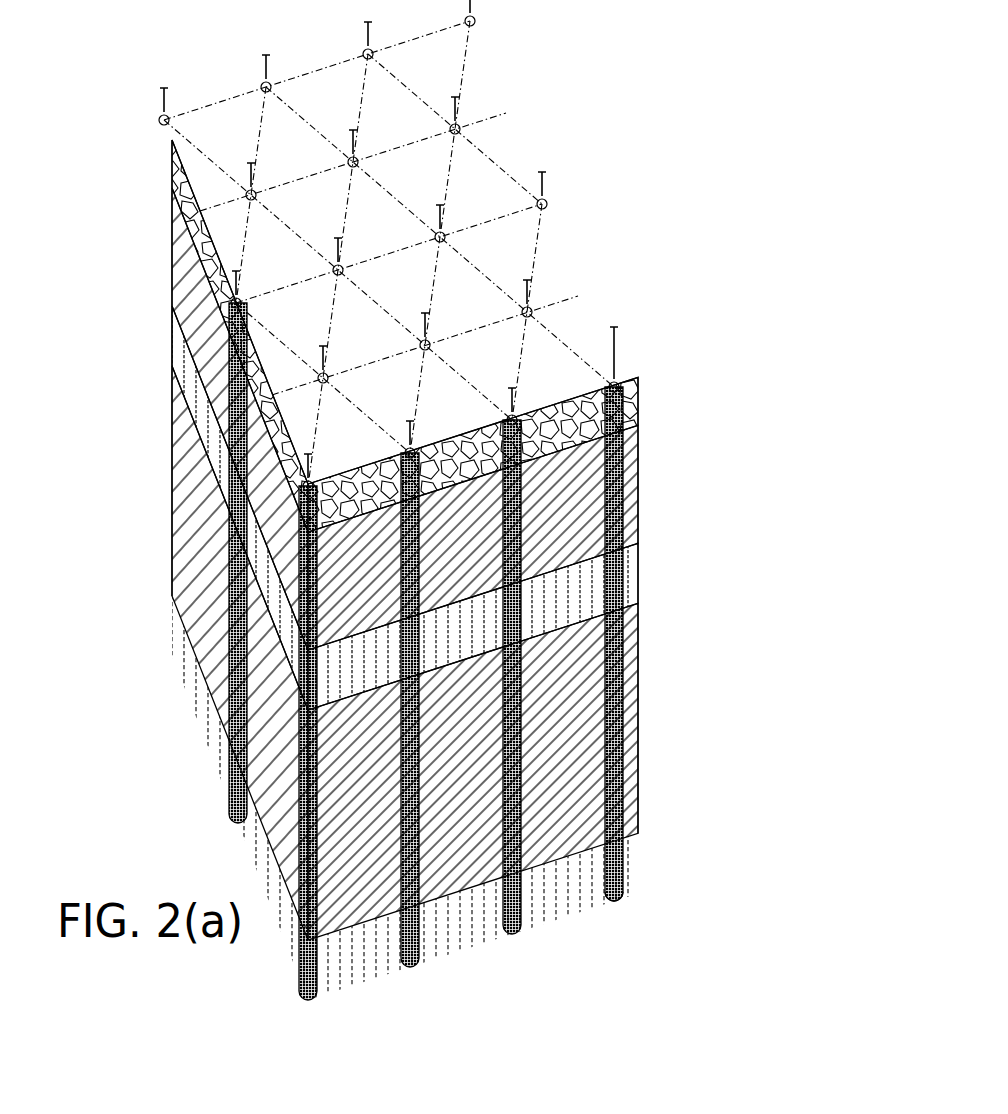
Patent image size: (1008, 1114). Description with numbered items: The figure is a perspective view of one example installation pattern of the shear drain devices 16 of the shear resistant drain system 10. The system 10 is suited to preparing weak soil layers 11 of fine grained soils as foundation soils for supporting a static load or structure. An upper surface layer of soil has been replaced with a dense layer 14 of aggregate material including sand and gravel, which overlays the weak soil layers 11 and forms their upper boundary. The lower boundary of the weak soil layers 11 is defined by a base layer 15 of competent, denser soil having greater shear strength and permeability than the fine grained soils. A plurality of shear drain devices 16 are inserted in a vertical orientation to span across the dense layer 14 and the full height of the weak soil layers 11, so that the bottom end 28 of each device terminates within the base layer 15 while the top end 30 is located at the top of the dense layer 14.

The shear resistant drain system 10 is at (642, 147).
The weak soil layers 11 is at (803, 433).
The dense layer 14 is at (650, 383).
The base layer 15 is at (650, 838).
The shear drain devices 16 is at (310, 560).
The bottom end 28 is at (613, 903).
The top end 30 is at (622, 383).